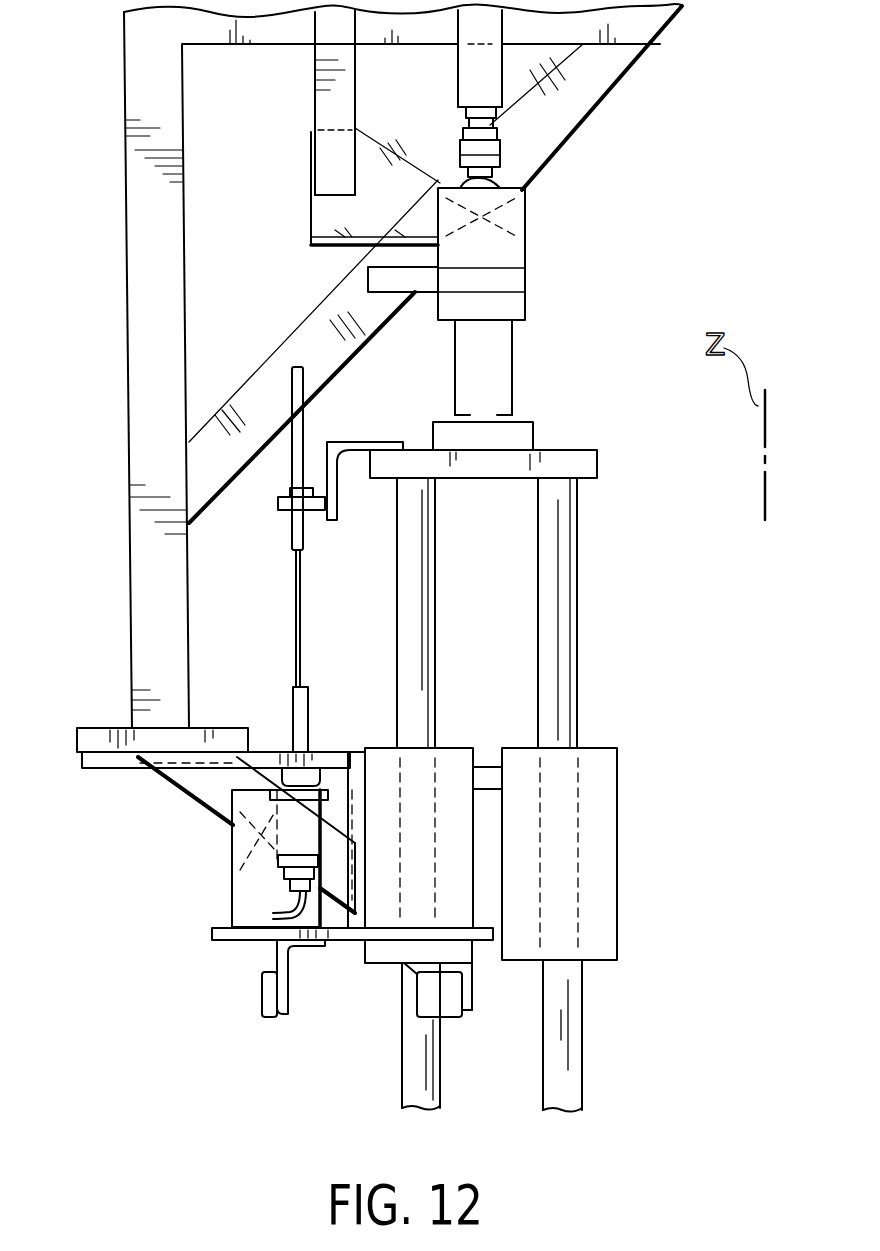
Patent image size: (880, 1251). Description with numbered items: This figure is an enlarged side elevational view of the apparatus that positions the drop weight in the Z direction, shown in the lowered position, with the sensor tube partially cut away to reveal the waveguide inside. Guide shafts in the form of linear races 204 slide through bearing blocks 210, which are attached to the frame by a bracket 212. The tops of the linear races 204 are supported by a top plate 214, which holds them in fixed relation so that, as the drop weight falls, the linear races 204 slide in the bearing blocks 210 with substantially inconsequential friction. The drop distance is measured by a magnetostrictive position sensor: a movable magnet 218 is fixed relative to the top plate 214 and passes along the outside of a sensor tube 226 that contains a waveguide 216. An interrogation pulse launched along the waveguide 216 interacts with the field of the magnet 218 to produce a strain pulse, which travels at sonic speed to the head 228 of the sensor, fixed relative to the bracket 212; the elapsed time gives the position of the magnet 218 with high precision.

The linear race 204 is at (430, 657).
The bearing block 210 is at (467, 833).
The bracket 212 is at (225, 780).
The top plate 214 is at (598, 465).
The magnetostrictive waveguide 216 is at (293, 640).
The movable magnet 218 is at (279, 492).
The sensor tube 226 is at (293, 715).
The head 228 is at (232, 876).